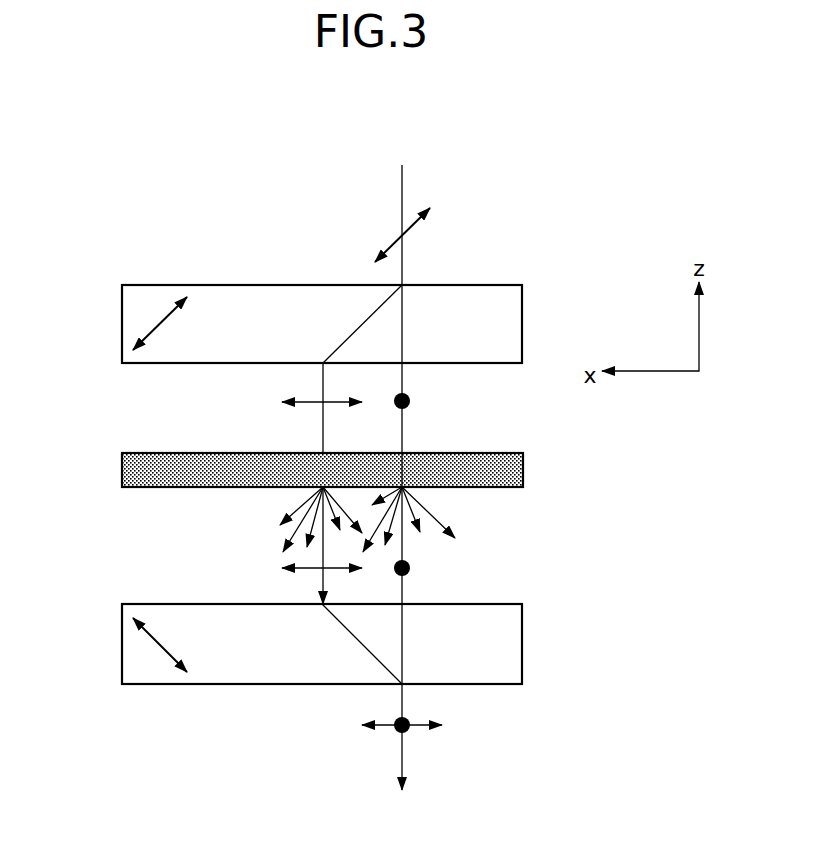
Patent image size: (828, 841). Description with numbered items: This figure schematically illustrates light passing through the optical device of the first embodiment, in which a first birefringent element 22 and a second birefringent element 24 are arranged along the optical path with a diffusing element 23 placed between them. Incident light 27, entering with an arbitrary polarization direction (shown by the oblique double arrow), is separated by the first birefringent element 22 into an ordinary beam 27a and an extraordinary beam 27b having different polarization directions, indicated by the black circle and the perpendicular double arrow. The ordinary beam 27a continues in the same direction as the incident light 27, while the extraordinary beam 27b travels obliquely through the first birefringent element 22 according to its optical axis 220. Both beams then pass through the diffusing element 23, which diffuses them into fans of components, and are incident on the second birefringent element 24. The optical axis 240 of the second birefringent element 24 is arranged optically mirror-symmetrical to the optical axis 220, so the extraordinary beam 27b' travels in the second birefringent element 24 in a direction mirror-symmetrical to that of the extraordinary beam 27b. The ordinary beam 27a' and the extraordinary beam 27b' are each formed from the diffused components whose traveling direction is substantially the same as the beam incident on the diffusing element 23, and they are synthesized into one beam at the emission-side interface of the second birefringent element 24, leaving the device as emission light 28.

The first birefringent element 22 is at (510, 285).
The optical axis of the first birefringent element 220 is at (147, 325).
The diffusing element 23 is at (510, 453).
The second birefringent element 24 is at (510, 604).
The optical axis of the second birefringent element 240 is at (153, 640).
The incident light 27 is at (402, 193).
The ordinary beam 27a is at (441, 357).
The extraordinary beam 27b is at (316, 380).
The ordinary beam in the second birefringent element 27a' is at (449, 643).
The extraordinary beam in the second birefringent element 27b' is at (309, 643).
The emission light 28 is at (402, 748).